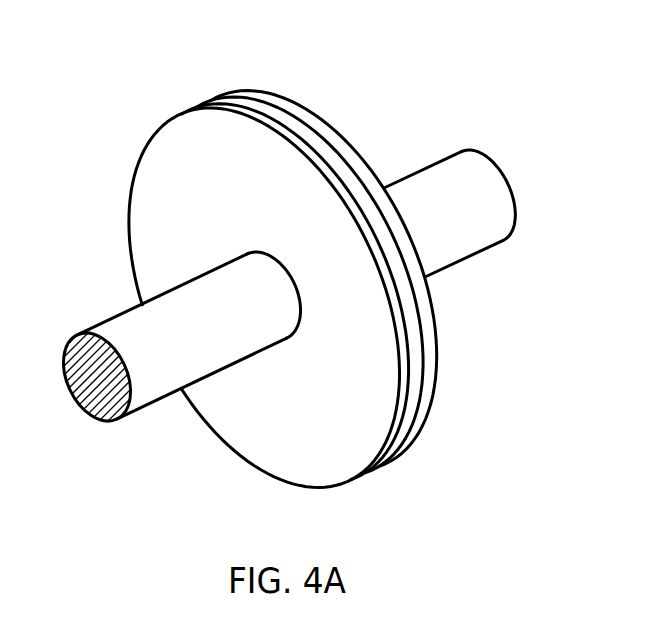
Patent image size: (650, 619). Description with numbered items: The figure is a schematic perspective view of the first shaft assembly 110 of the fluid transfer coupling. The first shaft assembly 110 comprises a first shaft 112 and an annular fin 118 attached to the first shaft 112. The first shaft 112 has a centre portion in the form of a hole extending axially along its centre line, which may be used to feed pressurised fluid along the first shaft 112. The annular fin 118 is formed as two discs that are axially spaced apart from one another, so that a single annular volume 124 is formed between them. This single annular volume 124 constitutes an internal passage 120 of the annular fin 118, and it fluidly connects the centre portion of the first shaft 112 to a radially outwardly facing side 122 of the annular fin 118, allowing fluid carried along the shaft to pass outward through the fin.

The first shaft assembly 110 is at (126, 86).
The first shaft 112 is at (118, 322).
The annular fin 118 is at (247, 454).
The internal passage 120 is at (415, 387).
The radially outwardly facing side 122 is at (390, 442).
The single annular volume 124 is at (407, 328).